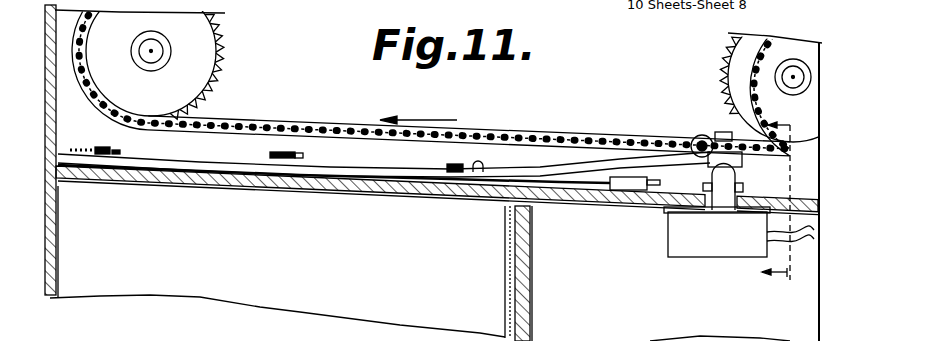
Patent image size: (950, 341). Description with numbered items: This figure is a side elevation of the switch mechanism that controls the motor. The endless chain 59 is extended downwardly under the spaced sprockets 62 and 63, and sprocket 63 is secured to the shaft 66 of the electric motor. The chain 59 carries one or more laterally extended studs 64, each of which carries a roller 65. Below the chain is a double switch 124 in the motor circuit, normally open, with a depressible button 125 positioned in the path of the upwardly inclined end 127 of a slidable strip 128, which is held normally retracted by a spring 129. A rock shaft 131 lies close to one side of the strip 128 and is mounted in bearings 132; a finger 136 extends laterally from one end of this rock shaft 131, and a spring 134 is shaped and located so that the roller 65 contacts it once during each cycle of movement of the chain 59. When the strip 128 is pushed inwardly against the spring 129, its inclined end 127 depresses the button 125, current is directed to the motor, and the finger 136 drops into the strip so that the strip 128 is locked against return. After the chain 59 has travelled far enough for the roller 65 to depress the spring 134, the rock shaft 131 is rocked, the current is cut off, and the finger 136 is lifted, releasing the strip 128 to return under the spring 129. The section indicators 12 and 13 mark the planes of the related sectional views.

The section line 12 is at (800, 117).
The section line 13 is at (798, 299).
The endless chain 59 is at (298, 123).
The sprocket 62 is at (155, 59).
The sprocket 63 is at (789, 77).
The stud 64 is at (694, 140).
The roller 65 is at (698, 136).
The shaft 66 is at (788, 76).
The double switch 124 is at (706, 250).
The depressible button 125 is at (723, 178).
The upwardly inclined end 127 is at (741, 162).
The slidable strip 128 is at (388, 173).
The spring 129 is at (253, 186).
The rock shaft 131 is at (597, 187).
The bearings 132 is at (628, 192).
The spring 134 is at (721, 132).
The finger 136 is at (484, 163).